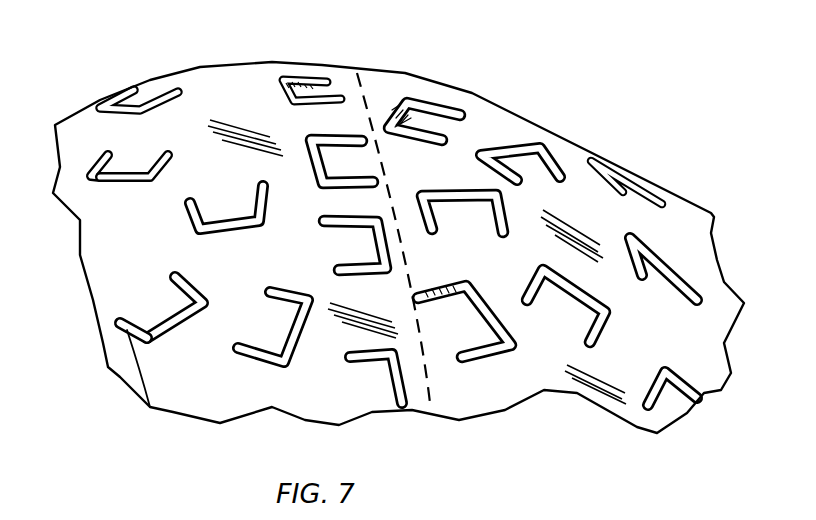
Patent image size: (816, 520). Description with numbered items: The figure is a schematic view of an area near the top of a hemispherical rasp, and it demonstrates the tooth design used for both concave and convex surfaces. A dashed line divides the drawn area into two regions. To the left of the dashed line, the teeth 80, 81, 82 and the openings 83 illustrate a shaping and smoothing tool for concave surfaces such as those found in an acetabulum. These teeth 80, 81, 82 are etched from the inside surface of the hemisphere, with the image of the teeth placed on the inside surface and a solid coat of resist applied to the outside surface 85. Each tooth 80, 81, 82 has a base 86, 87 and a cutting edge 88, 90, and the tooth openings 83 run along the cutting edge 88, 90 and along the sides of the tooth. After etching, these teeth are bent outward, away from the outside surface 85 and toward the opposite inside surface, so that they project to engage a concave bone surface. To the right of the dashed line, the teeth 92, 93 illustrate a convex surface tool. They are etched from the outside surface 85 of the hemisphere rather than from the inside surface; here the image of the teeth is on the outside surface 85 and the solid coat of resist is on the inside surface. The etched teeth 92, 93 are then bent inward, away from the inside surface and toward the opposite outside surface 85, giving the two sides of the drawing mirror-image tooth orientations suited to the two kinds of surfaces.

The tooth 80 is at (326, 83).
The tooth 81 is at (137, 334).
The tooth 82 is at (263, 333).
The openings 83 is at (150, 347).
The outside surface 85 is at (237, 97).
The base 86 is at (223, 203).
The base 87 is at (100, 178).
The cutting edge 88 is at (123, 157).
The cutting edge 90 is at (288, 77).
The tooth 92 is at (455, 330).
The tooth 93 is at (571, 317).